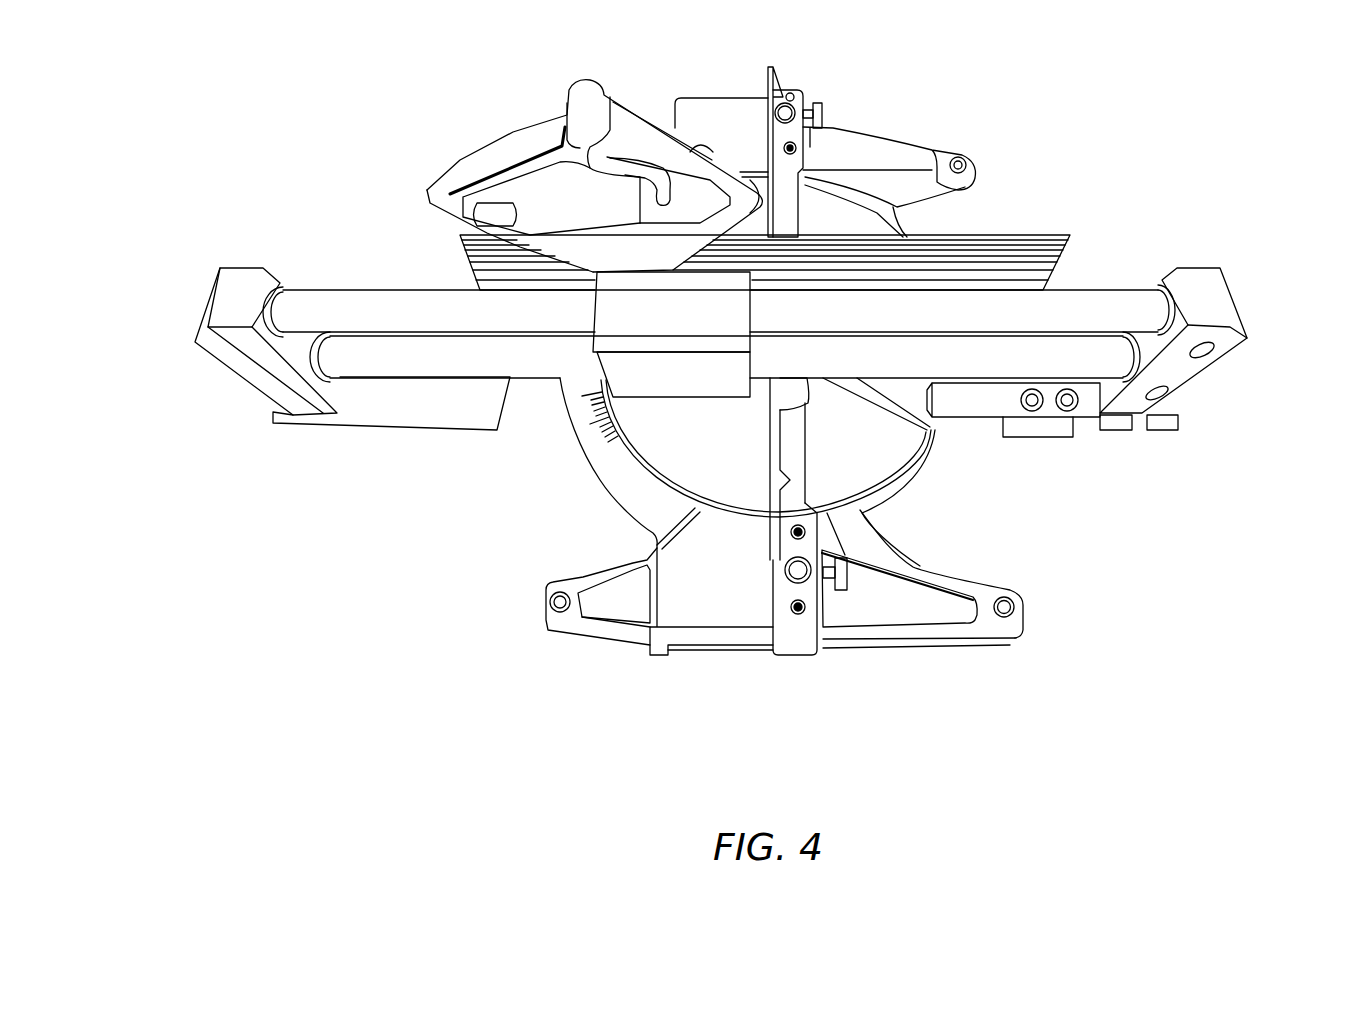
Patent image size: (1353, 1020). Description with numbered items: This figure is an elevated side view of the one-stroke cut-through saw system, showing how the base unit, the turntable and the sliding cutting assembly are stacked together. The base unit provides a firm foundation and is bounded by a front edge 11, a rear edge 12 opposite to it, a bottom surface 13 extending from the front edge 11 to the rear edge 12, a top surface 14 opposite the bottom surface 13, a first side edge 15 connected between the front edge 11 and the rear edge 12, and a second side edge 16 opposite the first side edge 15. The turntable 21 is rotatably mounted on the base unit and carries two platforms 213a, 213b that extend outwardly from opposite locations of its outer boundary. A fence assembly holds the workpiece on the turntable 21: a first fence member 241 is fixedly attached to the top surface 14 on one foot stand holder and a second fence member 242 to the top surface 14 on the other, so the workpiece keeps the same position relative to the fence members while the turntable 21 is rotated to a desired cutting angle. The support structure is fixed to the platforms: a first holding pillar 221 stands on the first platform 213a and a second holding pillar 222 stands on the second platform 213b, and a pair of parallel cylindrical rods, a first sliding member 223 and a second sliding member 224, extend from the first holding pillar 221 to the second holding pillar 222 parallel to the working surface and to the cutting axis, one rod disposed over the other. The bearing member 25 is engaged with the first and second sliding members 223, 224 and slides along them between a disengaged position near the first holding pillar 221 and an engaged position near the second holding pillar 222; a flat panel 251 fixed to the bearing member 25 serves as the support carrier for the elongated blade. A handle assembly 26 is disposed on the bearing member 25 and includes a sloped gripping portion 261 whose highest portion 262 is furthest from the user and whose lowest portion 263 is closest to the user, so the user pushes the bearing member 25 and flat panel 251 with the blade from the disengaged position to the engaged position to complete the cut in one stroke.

The front edge 11 is at (543, 594).
The rear edge 12 is at (1023, 595).
The bottom surface 13 is at (843, 643).
The top surface 14 is at (695, 585).
The first side edge 15 is at (752, 652).
The second side edge 16 is at (857, 132).
The turntable 21 is at (680, 443).
The bearing member 25 is at (613, 323).
The handle assembly 26 is at (643, 135).
The gripping portion 261 is at (517, 157).
The highest portion 262 is at (580, 82).
The lowest portion 263 is at (430, 188).
The flat panel 251 is at (953, 245).
The first holding pillar 221 is at (228, 290).
The second holding pillar 222 is at (1217, 287).
The first sliding member 223 is at (1037, 363).
The second sliding member 224 is at (1097, 300).
The first fence member 241 is at (763, 128).
The second fence member 242 is at (770, 540).
The first platform 213a is at (993, 400).
The second platform 213b is at (397, 408).